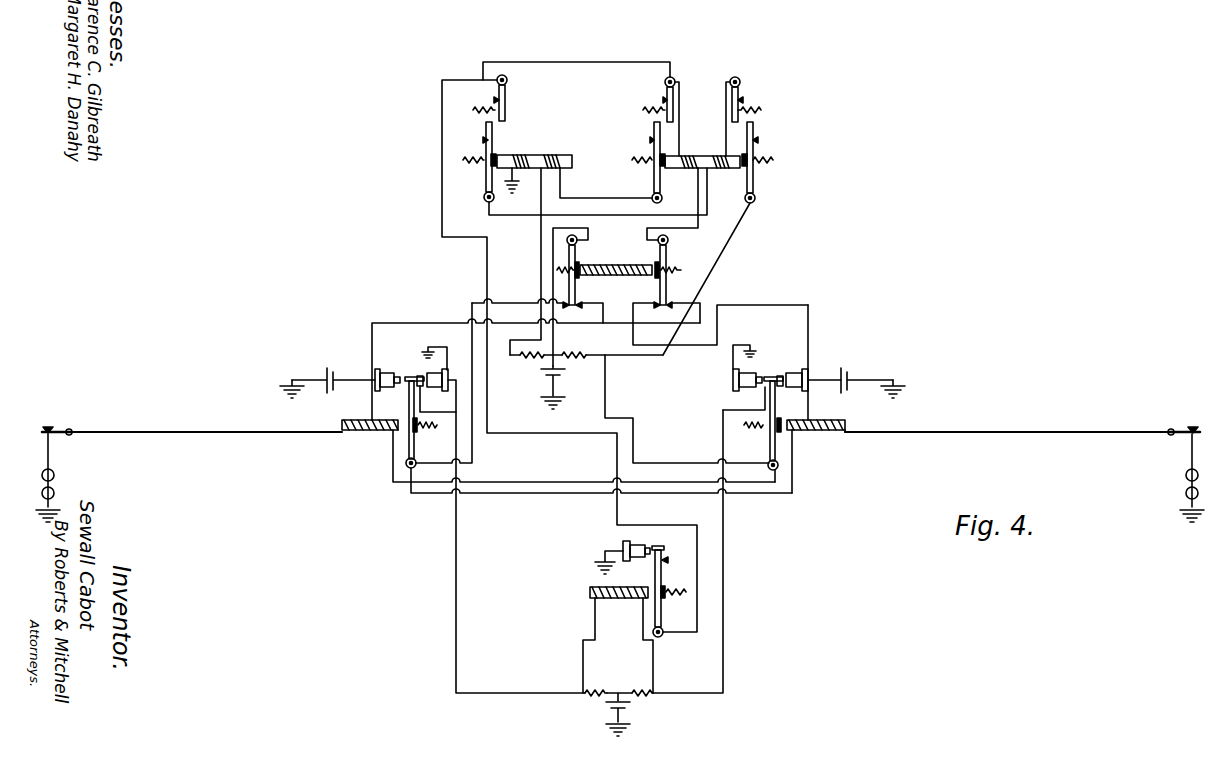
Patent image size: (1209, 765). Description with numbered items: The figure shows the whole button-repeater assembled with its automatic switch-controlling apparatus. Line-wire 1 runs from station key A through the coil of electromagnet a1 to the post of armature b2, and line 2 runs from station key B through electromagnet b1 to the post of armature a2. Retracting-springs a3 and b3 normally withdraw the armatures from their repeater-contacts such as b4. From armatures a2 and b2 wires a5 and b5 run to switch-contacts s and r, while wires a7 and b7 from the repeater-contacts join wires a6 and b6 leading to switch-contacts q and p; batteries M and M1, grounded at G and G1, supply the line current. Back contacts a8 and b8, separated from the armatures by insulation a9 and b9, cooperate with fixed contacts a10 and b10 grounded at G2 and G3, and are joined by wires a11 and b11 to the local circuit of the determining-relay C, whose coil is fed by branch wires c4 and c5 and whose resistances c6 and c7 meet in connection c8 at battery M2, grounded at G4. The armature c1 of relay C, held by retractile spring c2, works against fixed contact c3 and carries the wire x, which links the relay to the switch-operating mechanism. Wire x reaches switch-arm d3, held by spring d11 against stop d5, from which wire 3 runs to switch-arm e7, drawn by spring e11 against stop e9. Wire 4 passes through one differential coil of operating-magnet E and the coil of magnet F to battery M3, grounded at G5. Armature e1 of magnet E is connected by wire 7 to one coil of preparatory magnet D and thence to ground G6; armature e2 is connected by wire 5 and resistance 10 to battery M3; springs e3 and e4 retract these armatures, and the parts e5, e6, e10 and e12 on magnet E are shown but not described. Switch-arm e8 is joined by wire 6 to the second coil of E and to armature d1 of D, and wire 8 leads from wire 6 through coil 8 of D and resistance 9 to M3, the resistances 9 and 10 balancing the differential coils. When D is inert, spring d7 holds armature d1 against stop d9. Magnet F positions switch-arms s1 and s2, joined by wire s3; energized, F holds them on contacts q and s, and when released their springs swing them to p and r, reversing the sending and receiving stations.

The line-wire 1 is at (1071, 436).
The line 2 is at (204, 436).
The wire 3 is at (587, 62).
The wire 4 is at (679, 120).
The wire 5 is at (733, 236).
The wire 6 is at (523, 219).
The wire and coil 7 is at (516, 155).
The wire and coil 8 is at (531, 255).
The resistance 9 is at (521, 360).
The resistance 10 is at (582, 360).
The station key A is at (1186, 462).
The station key B is at (54, 462).
The preparatory magnet D is at (534, 151).
The operating-magnet E is at (702, 151).
The switch magnet F is at (619, 263).
The determining-relay C is at (630, 600).
The ground G is at (744, 480).
The ground G1 is at (285, 386).
The ground G2 is at (747, 348).
The ground G3 is at (432, 352).
The ground G4 is at (608, 731).
The ground G5 is at (561, 402).
The ground G6 is at (506, 192).
The battery M is at (856, 370).
The battery M1 is at (328, 367).
The battery M2 is at (634, 707).
The battery M3 is at (552, 375).
The wire x is at (442, 101).
The armature d1 is at (484, 198).
The switch-arm d3 is at (508, 80).
The stop d5 is at (499, 100).
The spring d7 is at (466, 164).
The stop d9 is at (482, 140).
The retractile spring d11 is at (473, 111).
The armature e1 is at (652, 197).
The armature e2 is at (755, 198).
The retractile spring e3 is at (632, 160).
The retractile spring e4 is at (777, 160).
The contact e5 is at (650, 140).
The contact e6 is at (758, 140).
The switch-arm e7 is at (665, 81).
The switch-arm e8 is at (740, 82).
The stop e9 is at (663, 100).
The contact e10 is at (743, 100).
The retractile spring e11 is at (643, 110).
The resistance e12 is at (765, 111).
The switch-contact s is at (589, 305).
The switch-arm s1 is at (565, 258).
The switch-arm s2 is at (668, 240).
The wire s3 is at (606, 240).
The switch-contact r is at (520, 298).
The switch-contact q is at (720, 316).
The switch-contact p is at (683, 305).
The electromagnet a1 is at (848, 425).
The armature a2 is at (768, 464).
The retracting-spring a3 is at (756, 430).
The wire a5 is at (699, 465).
The wire a6 is at (802, 305).
The wire a7 is at (821, 375).
The back contact a8 is at (774, 378).
The insulation a9 is at (780, 377).
The fixed contact a10 is at (732, 385).
The wire a11 is at (723, 633).
The electromagnet b1 is at (341, 423).
The armature b2 is at (416, 464).
The retracting-spring b3 is at (434, 429).
The repeater-contact b4 is at (396, 385).
The wire b5 is at (474, 457).
The wire b6 is at (443, 322).
The wire b7 is at (370, 376).
The back contact b8 is at (415, 377).
The insulation b9 is at (409, 378).
The fixed contact b10 is at (449, 382).
The wire b11 is at (456, 525).
The armature c1 is at (672, 562).
The retractile spring c2 is at (684, 591).
The fixed contact-piece c3 is at (623, 545).
The branch wire c4 is at (583, 655).
The branch wire c5 is at (653, 655).
The resistance c6 is at (597, 688).
The resistance c7 is at (641, 688).
The connection c8 is at (606, 704).